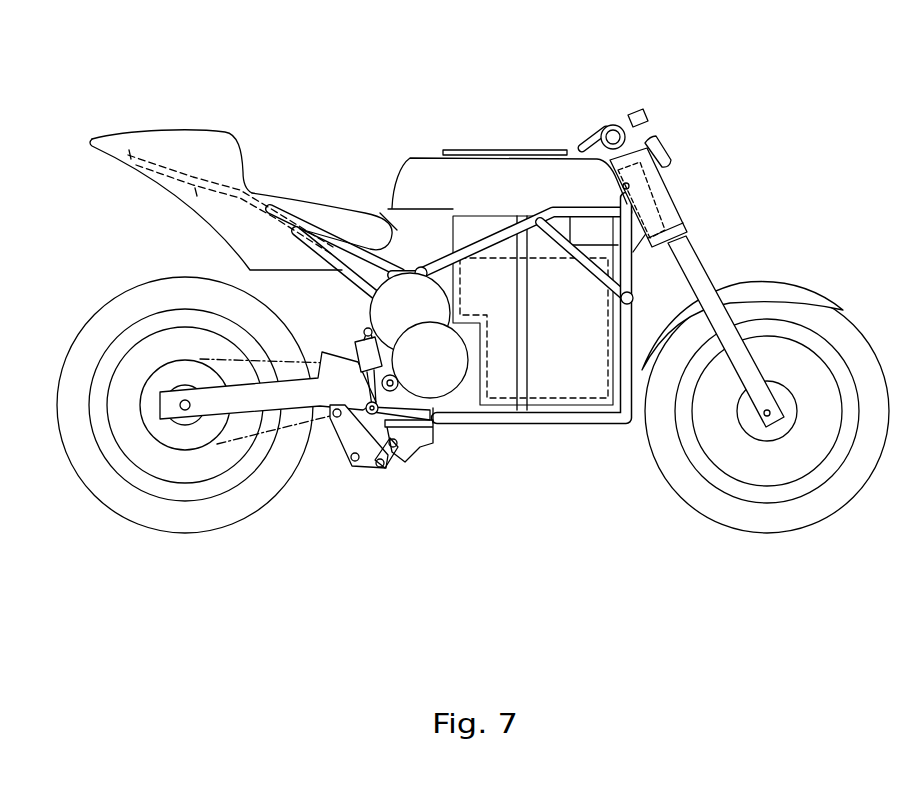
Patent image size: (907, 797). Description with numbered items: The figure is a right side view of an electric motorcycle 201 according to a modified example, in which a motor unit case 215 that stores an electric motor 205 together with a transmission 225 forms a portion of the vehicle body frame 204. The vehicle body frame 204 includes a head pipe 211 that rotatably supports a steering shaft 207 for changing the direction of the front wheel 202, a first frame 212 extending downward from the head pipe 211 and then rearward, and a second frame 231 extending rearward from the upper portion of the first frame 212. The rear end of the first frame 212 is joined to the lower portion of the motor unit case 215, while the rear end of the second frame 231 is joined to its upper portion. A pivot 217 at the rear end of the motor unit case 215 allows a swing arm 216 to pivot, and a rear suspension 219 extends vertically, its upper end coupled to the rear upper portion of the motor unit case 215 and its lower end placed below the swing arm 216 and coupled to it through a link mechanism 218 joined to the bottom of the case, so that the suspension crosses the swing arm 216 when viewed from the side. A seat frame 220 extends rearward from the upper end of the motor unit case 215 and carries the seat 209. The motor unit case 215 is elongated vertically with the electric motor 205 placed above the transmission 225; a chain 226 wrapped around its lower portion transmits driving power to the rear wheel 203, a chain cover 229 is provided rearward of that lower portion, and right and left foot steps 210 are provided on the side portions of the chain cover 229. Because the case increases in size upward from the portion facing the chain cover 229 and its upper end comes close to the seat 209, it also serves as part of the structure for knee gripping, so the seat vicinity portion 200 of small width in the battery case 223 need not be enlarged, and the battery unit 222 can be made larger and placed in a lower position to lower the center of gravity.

The seat vicinity portion 200 is at (461, 237).
The electric motorcycle 201 is at (473, 319).
The front wheel 202 is at (722, 514).
The rear wheel 203 is at (220, 518).
The vehicle body frame 204 is at (642, 283).
The electric motor 205 is at (363, 318).
The steering shaft 207 is at (660, 200).
The seat 209 is at (293, 213).
The foot steps 210 is at (398, 468).
The head pipe 211 is at (647, 197).
The first frame 212 is at (623, 424).
The motor unit case 215 is at (387, 228).
The swing arm 216 is at (243, 407).
The pivot 217 is at (350, 352).
The link mechanism 218 is at (360, 470).
The rear suspension 219 is at (347, 432).
The seat frame 220 is at (197, 196).
The battery unit 222 is at (510, 258).
The battery case 223 is at (493, 413).
The transmission 225 is at (441, 380).
The chain 226 is at (223, 447).
The chain cover 229 is at (295, 400).
The second frame 231 is at (487, 240).